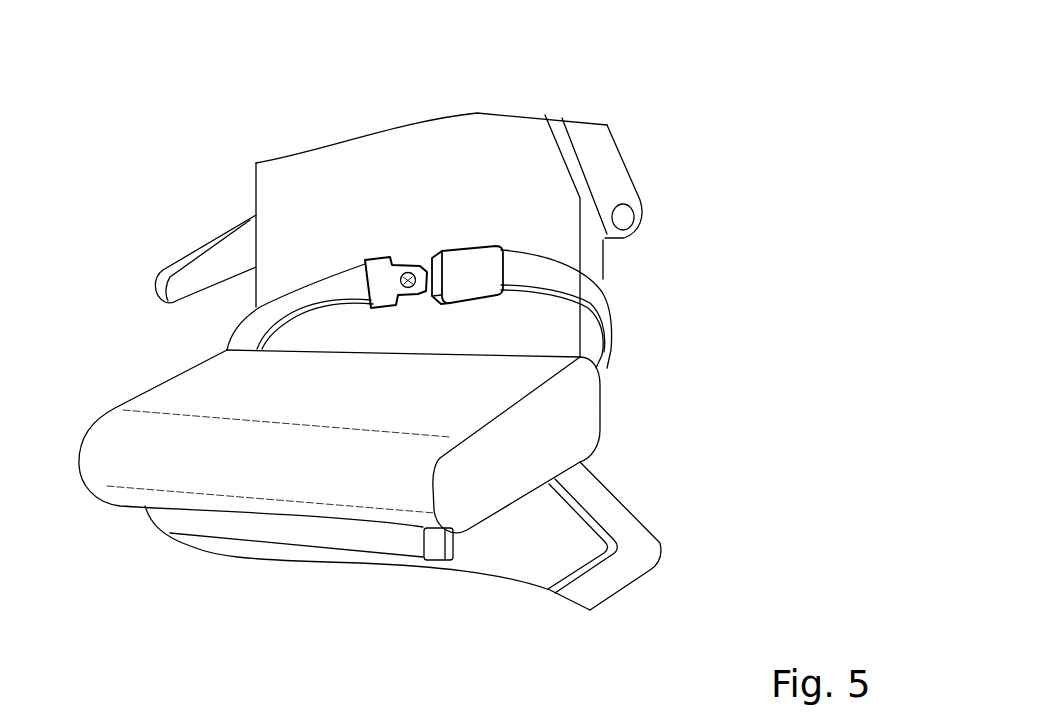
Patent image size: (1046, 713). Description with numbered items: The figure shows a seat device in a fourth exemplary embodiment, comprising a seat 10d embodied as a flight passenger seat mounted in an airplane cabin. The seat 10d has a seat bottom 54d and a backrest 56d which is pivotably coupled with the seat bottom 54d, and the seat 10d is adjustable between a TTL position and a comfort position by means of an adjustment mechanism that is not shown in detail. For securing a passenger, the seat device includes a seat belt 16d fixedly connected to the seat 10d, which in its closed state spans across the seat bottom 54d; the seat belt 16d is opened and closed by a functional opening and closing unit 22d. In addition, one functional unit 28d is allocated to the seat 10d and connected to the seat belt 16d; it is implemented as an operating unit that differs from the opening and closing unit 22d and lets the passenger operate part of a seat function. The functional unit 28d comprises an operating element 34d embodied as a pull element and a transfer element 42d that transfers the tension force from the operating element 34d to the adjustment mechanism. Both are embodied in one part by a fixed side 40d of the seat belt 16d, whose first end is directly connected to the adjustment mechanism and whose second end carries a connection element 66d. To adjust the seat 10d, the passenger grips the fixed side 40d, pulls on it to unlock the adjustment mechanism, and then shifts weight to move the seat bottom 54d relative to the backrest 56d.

The seat 10d is at (402, 125).
The seat belt 16d is at (619, 330).
The functional opening and closing unit 22d is at (441, 236).
The functional unit 28d is at (365, 256).
The operating element 34d is at (322, 290).
The fixed side of the seat belt 40d is at (260, 320).
The transfer element 42d is at (312, 300).
The seat bottom 54d is at (507, 380).
The backrest 56d is at (513, 177).
The connection element 66d is at (412, 300).